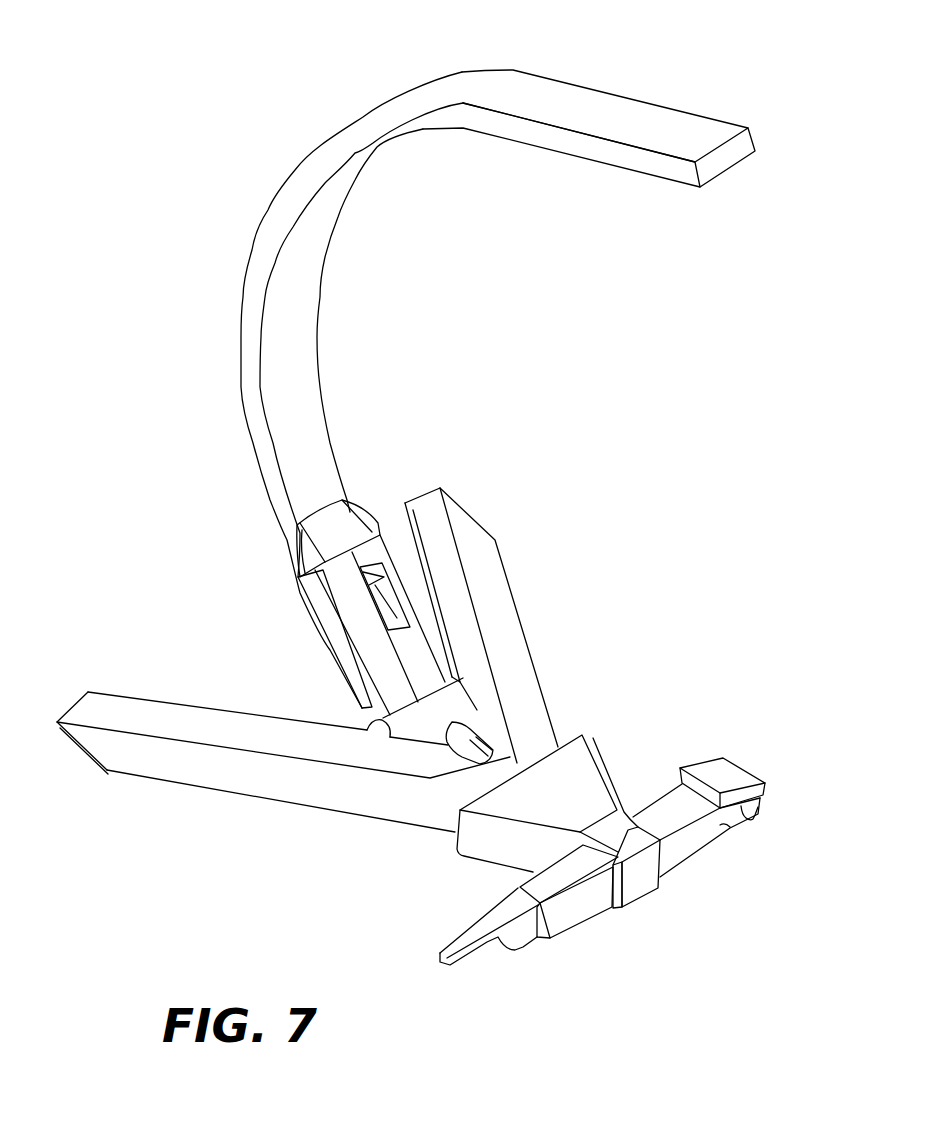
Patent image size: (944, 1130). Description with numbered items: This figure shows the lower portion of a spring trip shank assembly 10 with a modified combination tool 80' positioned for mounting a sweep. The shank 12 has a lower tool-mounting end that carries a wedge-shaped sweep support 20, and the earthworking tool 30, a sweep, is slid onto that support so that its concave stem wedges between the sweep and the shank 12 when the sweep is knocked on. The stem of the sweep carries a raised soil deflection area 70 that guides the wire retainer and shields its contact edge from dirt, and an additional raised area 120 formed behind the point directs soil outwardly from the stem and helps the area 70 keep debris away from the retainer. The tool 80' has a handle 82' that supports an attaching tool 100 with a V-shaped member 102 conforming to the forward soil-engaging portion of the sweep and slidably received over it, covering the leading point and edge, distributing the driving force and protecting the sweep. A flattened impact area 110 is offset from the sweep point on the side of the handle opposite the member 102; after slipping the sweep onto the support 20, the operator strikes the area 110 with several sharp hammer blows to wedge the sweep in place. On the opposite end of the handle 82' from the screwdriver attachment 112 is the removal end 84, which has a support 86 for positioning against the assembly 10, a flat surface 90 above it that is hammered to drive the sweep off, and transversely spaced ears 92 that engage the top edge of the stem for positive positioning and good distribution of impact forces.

The spring trip shank assembly 10 is at (158, 182).
The shank 12 is at (493, 75).
The sweep support 20 is at (352, 498).
The raised soil deflection area 70 is at (387, 580).
The earthworking tool 30 is at (405, 840).
The additional raised area 120 is at (472, 723).
The attaching tool 100 is at (568, 755).
The V-shaped member 102 is at (497, 862).
The flattened impact area 110 is at (638, 875).
The handle 82' is at (569, 917).
The screwdriver attachment 112 is at (450, 967).
The removal end 84 is at (728, 827).
The flat surface 90 is at (723, 773).
The support 86 is at (764, 798).
The ears 92 is at (747, 818).
The alternate embodiment of removal tool 80' is at (674, 702).